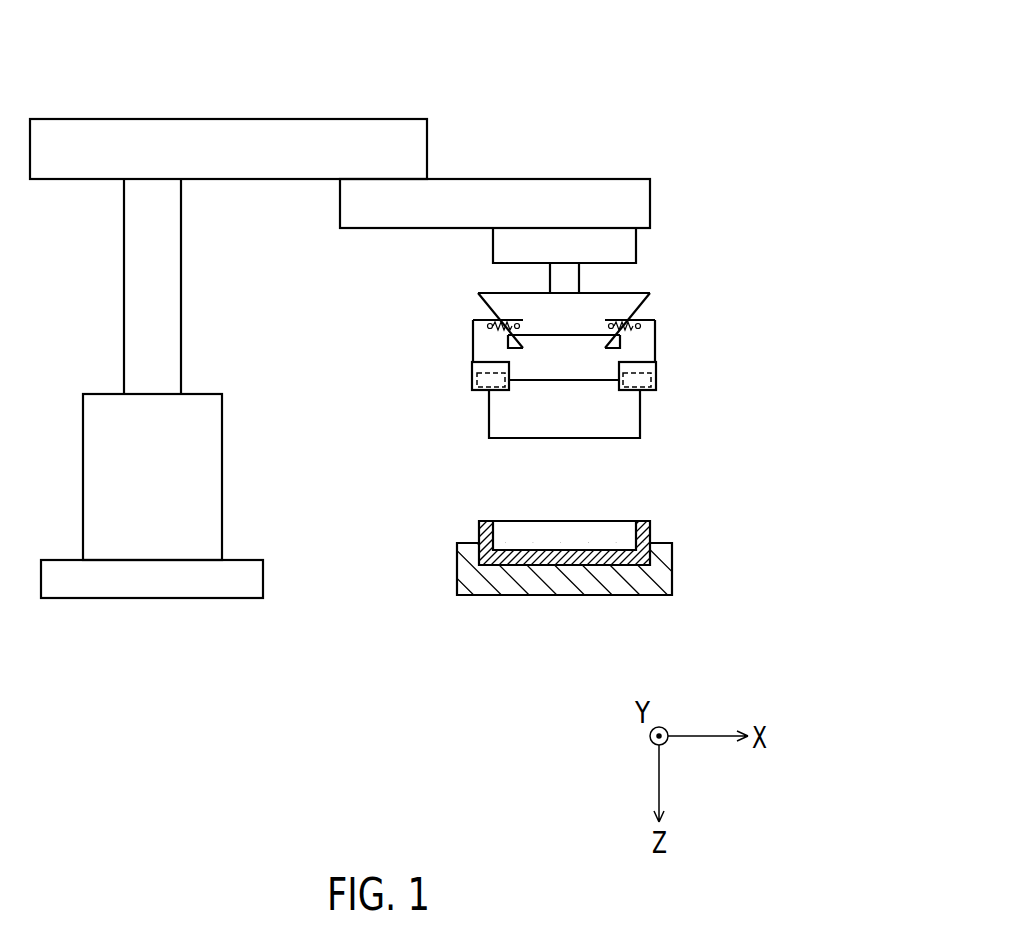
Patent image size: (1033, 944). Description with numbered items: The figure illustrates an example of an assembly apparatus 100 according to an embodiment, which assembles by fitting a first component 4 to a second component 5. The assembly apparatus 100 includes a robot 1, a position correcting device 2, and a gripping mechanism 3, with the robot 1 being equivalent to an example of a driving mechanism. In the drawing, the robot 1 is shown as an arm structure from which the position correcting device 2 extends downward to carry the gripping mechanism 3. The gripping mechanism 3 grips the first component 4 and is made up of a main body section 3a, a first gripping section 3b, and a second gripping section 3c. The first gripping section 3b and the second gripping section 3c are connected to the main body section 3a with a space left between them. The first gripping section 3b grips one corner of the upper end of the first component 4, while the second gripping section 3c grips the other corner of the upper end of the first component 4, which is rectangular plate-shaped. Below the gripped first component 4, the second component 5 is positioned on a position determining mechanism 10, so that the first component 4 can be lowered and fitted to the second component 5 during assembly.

The assembly apparatus 100 is at (641, 83).
The robot 1 is at (300, 119).
The position correcting device 2 is at (580, 283).
The gripping mechanism 3 is at (691, 273).
The main body section 3a is at (503, 292).
The first gripping section 3b is at (473, 340).
The second gripping section 3c is at (654, 340).
The first component 4 is at (640, 422).
The second component 5 is at (642, 521).
The position determining mechanism 10 is at (672, 577).